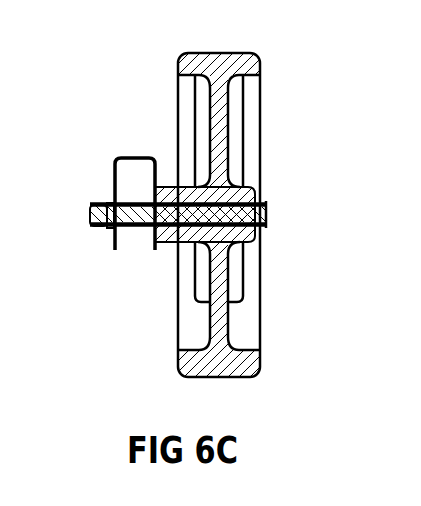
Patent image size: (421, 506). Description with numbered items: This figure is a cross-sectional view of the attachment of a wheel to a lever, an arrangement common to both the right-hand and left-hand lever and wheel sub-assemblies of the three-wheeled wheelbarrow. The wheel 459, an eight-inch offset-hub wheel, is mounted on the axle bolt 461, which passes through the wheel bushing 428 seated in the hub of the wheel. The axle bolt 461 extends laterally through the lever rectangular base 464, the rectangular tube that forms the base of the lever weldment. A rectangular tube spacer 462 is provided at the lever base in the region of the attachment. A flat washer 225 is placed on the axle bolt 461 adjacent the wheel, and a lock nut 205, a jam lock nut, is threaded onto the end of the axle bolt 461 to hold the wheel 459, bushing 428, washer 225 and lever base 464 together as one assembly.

The wheel 459 is at (176, 70).
The wheel bushing 428 is at (212, 192).
The lever rectangular base 464 is at (109, 158).
The axle bolt 461 is at (269, 202).
The flat washer 225 is at (258, 243).
The lock nut 205 is at (102, 234).
The rectangular tube spacer 462 is at (131, 233).